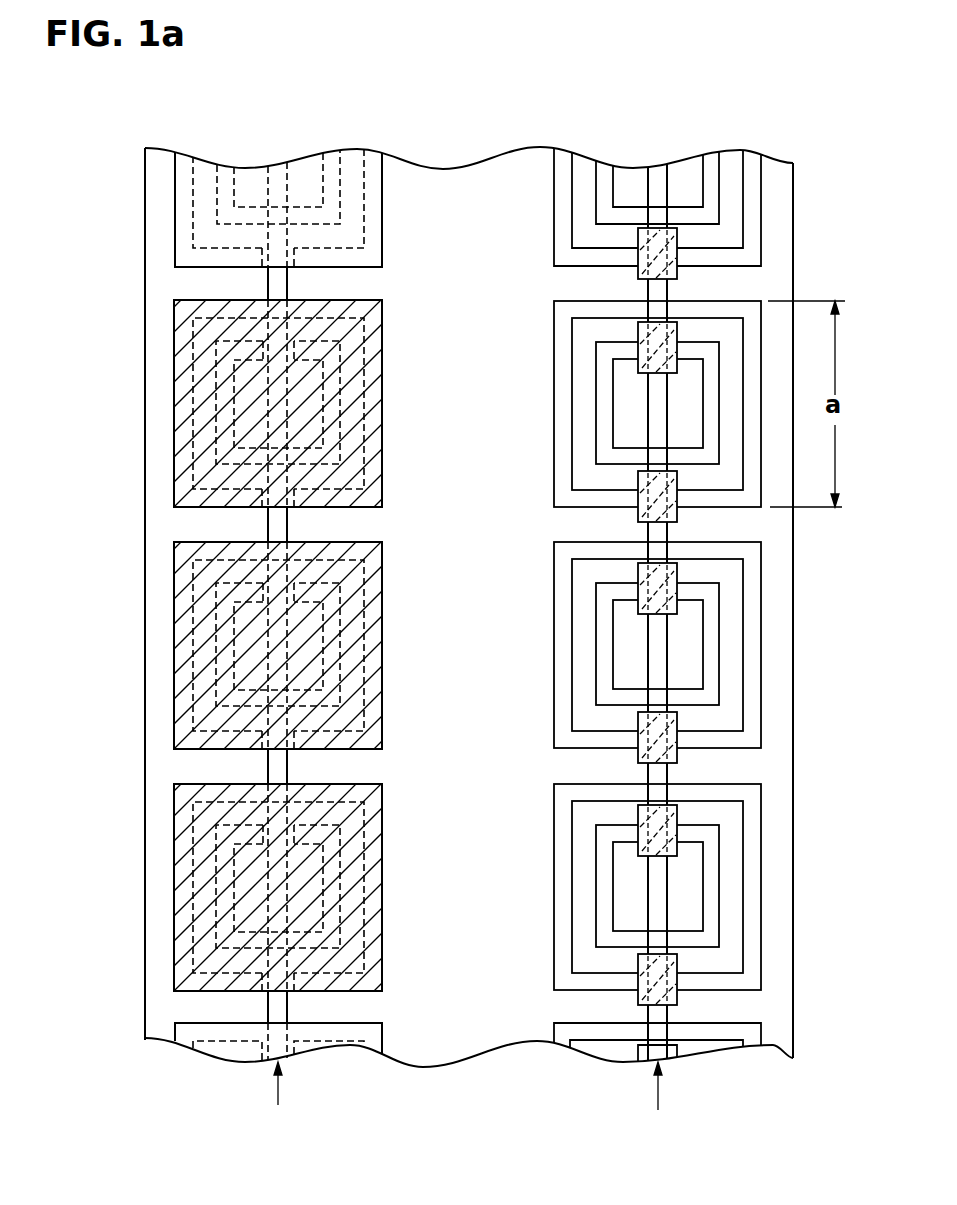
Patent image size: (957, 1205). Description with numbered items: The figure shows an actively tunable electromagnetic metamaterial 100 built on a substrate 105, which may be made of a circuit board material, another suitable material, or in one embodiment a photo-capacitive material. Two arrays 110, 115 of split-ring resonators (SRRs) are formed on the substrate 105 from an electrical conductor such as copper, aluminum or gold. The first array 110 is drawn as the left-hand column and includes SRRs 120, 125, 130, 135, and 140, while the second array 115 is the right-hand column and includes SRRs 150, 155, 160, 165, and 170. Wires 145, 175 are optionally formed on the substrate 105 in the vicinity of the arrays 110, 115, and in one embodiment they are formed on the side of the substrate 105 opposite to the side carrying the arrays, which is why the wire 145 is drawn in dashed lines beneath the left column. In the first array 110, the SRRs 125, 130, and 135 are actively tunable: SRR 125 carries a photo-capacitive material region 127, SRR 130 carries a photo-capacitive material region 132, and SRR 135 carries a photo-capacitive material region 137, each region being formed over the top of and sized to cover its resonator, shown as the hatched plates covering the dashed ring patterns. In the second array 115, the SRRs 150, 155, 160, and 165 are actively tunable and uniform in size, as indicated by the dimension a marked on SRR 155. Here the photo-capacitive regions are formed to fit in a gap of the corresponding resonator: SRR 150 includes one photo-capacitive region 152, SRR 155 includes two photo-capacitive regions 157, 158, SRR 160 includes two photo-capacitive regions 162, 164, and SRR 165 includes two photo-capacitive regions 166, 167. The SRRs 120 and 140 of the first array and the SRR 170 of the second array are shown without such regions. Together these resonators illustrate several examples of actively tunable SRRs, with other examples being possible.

The metamaterial 100 is at (356, 88).
The substrate 105 is at (485, 168).
The array 110 is at (278, 1099).
The array 115 is at (658, 1100).
The SRR 120 is at (145, 237).
The SRR 125 is at (175, 347).
The photo-capacitive material region 127 is at (202, 458).
The SRR 130 is at (175, 647).
The photo-capacitive material region 132 is at (202, 690).
The SRR 135 is at (175, 825).
The photo-capacitive material region 137 is at (202, 927).
The SRR 140 is at (175, 1030).
The wire 145 is at (280, 168).
The SRR 150 is at (753, 160).
The photo-capacitive region 152 is at (663, 235).
The SRR 155 is at (733, 300).
The photo-capacitive region 157 is at (665, 325).
The photo-capacitive region 158 is at (667, 522).
The SRR 160 is at (761, 658).
The photo-capacitive region 162 is at (673, 588).
The photo-capacitive region 164 is at (668, 762).
The SRR 165 is at (761, 915).
The photo-capacitive region 166 is at (673, 828).
The photo-capacitive region 167 is at (670, 1000).
The SRR 170 is at (758, 1030).
The wire 175 is at (657, 170).